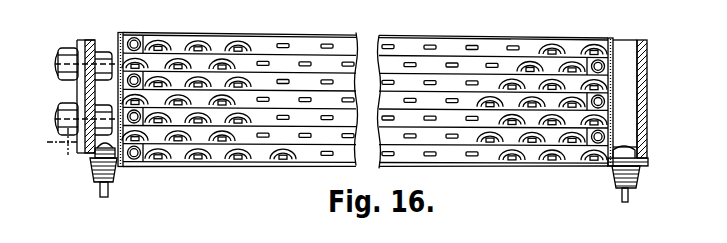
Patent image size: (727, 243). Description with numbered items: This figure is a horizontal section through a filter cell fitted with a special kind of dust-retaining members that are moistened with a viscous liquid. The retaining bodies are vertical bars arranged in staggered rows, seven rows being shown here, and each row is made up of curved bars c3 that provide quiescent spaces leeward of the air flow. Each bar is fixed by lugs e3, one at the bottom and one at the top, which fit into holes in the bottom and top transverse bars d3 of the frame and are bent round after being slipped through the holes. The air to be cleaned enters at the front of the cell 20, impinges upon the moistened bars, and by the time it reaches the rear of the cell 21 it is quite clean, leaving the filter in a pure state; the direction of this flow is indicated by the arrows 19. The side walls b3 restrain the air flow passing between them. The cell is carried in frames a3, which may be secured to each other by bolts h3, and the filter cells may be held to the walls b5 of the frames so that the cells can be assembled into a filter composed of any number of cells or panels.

The arrows 19 is at (201, 12).
The front of the cell 20 is at (423, 36).
The rear of the cell 21 is at (458, 168).
The frames a3 is at (622, 53).
The side walls b3 is at (667, 59).
The walls of the frames b5 is at (637, 158).
The curved bars c3 is at (257, 36).
The transverse bars d3 is at (578, 0).
The lugs e3 is at (510, 154).
The bolts h3 is at (65, 48).